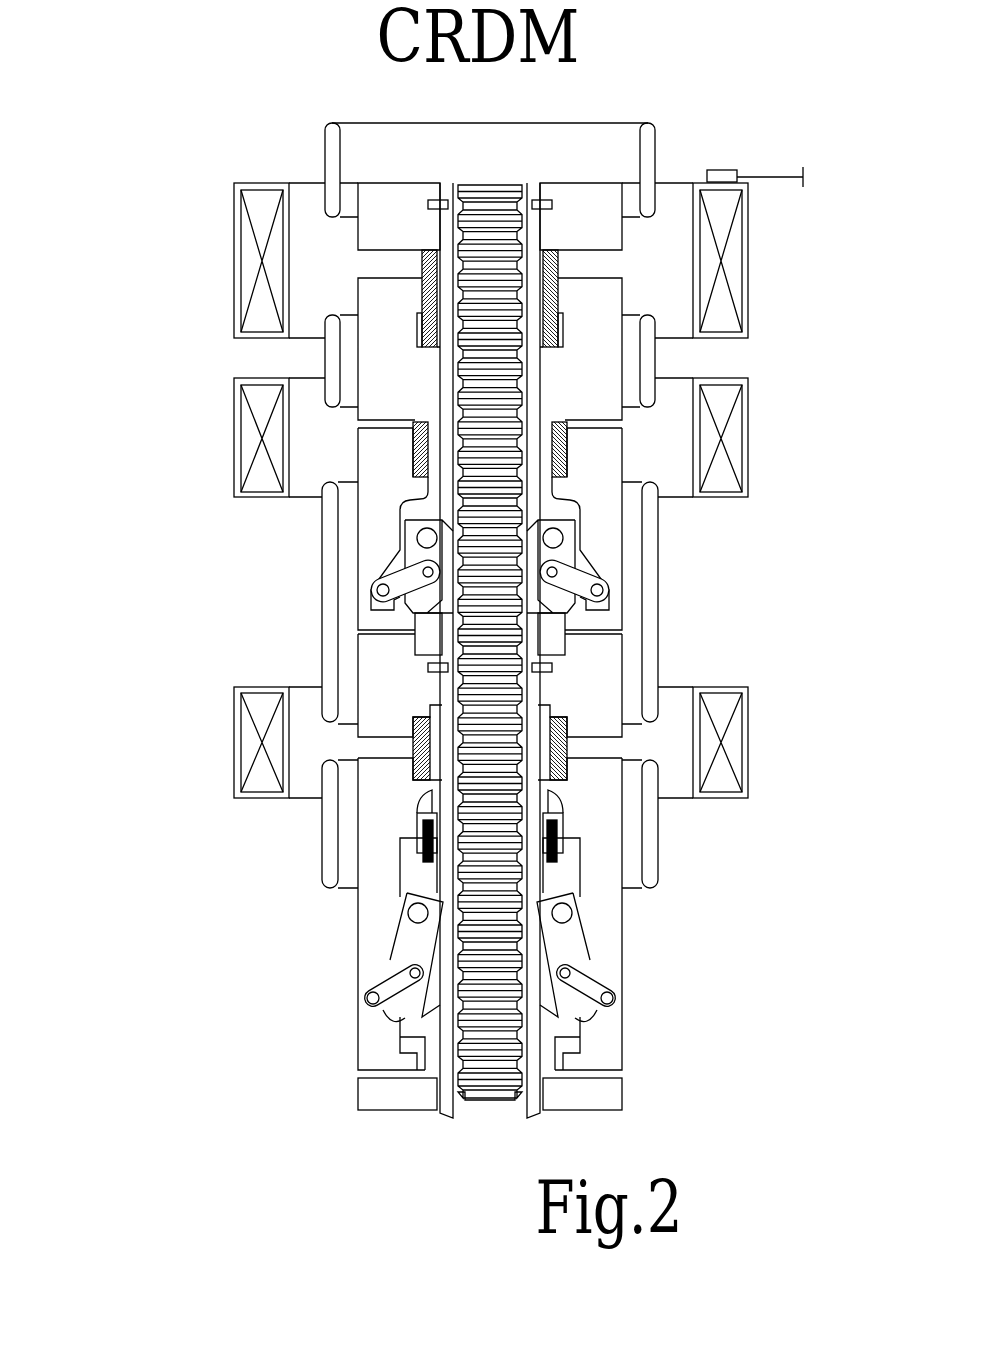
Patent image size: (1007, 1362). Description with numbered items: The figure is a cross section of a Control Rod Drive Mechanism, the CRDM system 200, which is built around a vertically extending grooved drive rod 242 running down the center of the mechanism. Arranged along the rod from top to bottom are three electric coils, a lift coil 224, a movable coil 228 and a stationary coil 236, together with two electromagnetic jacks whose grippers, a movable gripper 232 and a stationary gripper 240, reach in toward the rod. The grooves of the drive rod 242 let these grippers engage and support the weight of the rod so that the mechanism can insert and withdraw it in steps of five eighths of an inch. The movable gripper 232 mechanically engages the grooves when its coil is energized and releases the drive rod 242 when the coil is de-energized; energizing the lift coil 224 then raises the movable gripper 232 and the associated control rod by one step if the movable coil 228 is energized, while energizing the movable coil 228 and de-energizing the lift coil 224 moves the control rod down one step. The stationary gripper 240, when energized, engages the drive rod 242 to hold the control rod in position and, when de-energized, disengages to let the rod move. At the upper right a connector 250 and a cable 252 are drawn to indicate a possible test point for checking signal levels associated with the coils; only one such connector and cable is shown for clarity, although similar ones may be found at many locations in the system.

The CRDM system 200 is at (729, 98).
The lift coil 224 is at (428, 260).
The movable coil 228 is at (413, 437).
The movable gripper 232 is at (430, 597).
The stationary coil 236 is at (404, 742).
The stationary gripper 240 is at (403, 997).
The drive rod 242 is at (488, 1110).
The connector 250 is at (725, 170).
The cable 252 is at (773, 178).